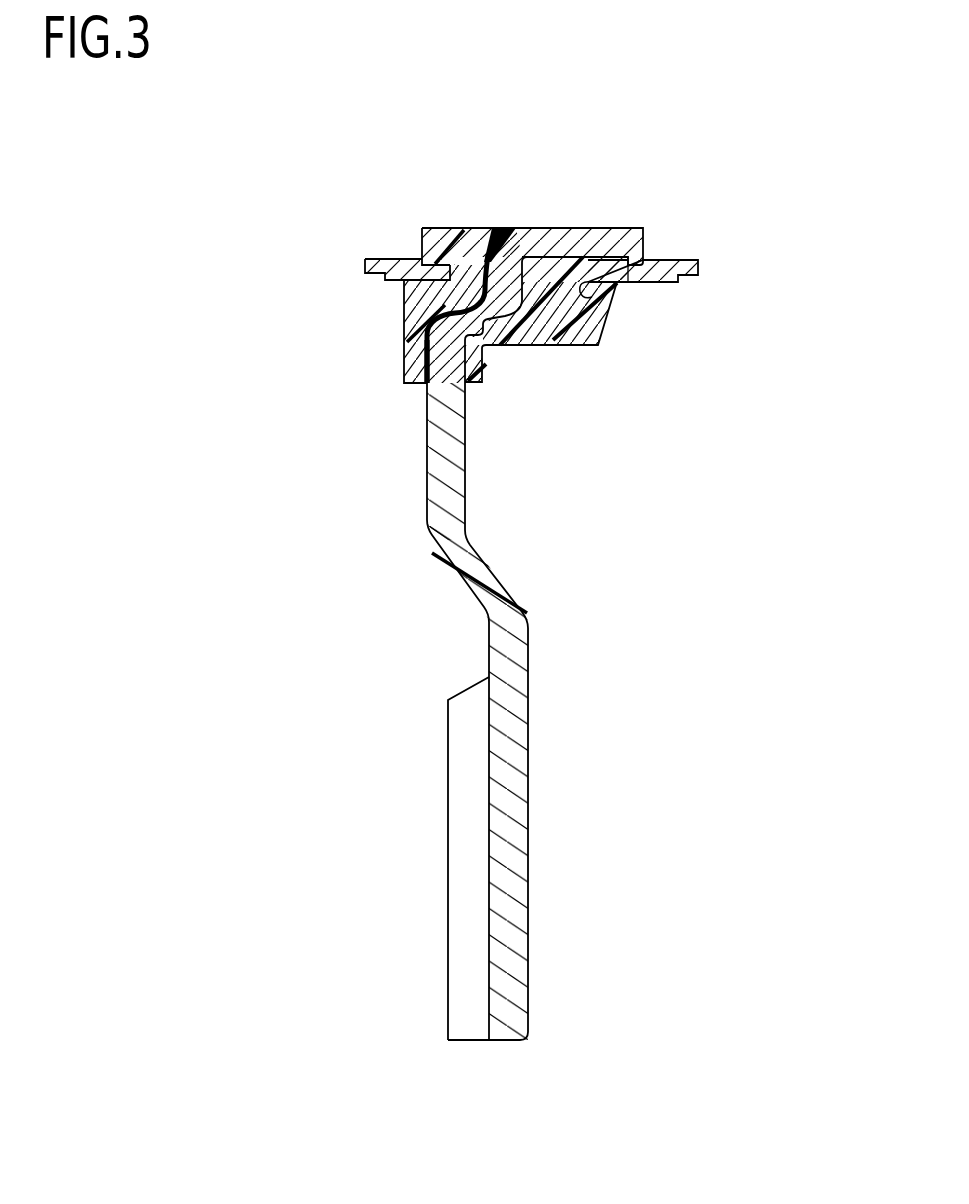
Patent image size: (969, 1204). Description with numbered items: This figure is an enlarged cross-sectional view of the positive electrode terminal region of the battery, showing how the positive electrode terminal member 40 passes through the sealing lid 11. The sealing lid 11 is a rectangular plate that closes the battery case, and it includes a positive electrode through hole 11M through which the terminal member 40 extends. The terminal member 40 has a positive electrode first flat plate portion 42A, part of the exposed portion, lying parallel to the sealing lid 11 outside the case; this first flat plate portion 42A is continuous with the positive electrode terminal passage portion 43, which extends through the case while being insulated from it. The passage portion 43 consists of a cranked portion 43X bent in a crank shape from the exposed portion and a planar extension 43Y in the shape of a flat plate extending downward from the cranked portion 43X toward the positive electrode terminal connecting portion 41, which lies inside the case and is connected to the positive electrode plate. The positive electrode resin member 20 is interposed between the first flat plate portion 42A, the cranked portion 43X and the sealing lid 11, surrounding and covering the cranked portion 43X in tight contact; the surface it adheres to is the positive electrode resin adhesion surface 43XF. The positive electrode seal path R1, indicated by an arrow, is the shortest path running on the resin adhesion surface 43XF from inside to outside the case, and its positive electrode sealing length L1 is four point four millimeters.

The positive electrode terminal member 40 is at (548, 224).
The positive electrode first flat plate portion 42A is at (596, 232).
The sealing lid 11 is at (390, 259).
The positive electrode through hole 11M is at (607, 304).
The positive electrode resin member 20 is at (445, 227).
The positive electrode resin adhesion surface 43XF is at (550, 255).
The positive electrode seal path R1 is at (482, 292).
The positive electrode sealing length L1 is at (481, 294).
The positive electrode terminal passage portion 43 is at (595, 649).
The cranked portion 43X is at (530, 258).
The planar extension 43Y is at (488, 572).
The positive electrode terminal connecting portion 41 is at (518, 916).